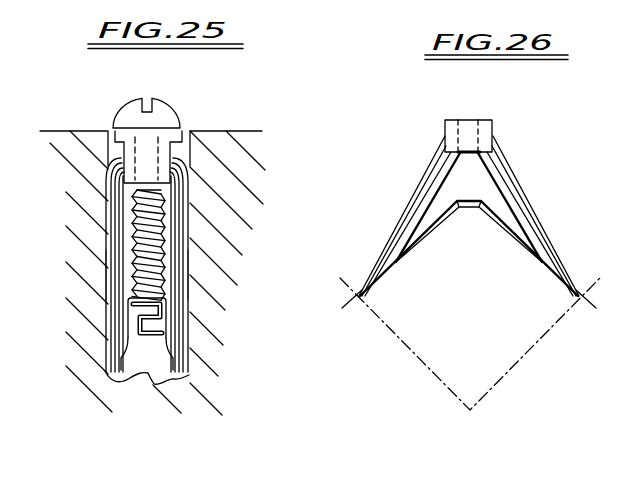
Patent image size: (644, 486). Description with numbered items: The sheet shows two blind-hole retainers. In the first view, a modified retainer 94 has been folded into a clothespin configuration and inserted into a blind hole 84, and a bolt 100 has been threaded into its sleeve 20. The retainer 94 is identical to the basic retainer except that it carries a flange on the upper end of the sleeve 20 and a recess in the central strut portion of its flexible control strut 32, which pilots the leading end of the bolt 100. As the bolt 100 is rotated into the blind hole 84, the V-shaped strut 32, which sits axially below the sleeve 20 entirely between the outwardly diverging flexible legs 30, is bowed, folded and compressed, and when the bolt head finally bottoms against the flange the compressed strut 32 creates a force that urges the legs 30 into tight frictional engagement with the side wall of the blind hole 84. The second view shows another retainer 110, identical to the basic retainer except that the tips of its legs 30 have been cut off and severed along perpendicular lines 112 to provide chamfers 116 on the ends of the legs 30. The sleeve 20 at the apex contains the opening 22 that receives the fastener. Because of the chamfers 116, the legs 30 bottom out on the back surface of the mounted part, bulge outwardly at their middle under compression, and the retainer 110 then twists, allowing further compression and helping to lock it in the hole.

In FIG. 25, the bolt 100 is at (163, 118).
In FIG. 25, the modified retainer 94 is at (190, 163).
In FIG. 25, the legs 30 is at (108, 272).
In FIG. 26, the legs 30 is at (392, 232).
In FIG. 25, the control strut 32 is at (130, 317).
In FIG. 25, the blind hole 84 is at (146, 374).
In FIG. 26, the non-threaded opening 22 is at (478, 134).
In FIG. 26, the sleeve 20 is at (487, 137).
In FIG. 26, the retainer 110 is at (472, 246).
In FIG. 26, the chamfers 116 is at (472, 317).
In FIG. 26, the perpendicular lines 112 is at (419, 359).